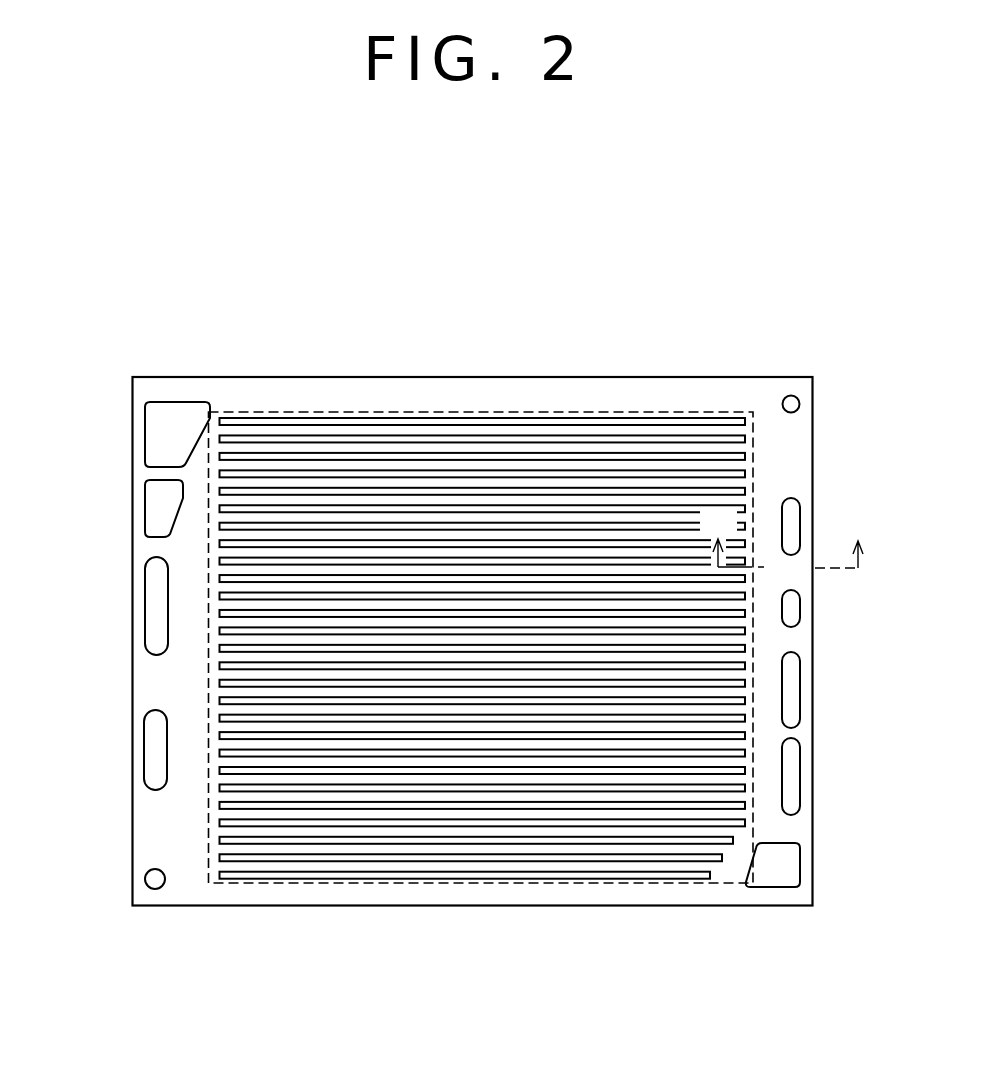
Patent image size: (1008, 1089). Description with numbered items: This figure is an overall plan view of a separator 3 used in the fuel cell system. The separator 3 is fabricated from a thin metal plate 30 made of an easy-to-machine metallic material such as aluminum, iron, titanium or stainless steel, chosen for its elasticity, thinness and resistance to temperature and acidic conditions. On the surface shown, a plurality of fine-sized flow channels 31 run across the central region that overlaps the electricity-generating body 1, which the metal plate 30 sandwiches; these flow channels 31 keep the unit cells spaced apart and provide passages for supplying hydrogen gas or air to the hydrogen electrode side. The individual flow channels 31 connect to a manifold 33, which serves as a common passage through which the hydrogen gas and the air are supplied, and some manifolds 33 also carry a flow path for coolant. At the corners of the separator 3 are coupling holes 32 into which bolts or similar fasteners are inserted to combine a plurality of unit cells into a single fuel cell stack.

The electricity-generating body 1 is at (553, 410).
The separator 3 is at (464, 600).
The metal plate 30 is at (418, 376).
The flow channels 31 is at (627, 455).
The coupling holes 32 is at (800, 404).
The manifold 33 is at (792, 520).